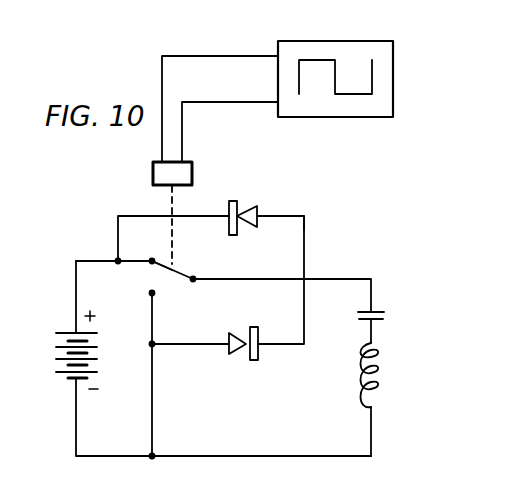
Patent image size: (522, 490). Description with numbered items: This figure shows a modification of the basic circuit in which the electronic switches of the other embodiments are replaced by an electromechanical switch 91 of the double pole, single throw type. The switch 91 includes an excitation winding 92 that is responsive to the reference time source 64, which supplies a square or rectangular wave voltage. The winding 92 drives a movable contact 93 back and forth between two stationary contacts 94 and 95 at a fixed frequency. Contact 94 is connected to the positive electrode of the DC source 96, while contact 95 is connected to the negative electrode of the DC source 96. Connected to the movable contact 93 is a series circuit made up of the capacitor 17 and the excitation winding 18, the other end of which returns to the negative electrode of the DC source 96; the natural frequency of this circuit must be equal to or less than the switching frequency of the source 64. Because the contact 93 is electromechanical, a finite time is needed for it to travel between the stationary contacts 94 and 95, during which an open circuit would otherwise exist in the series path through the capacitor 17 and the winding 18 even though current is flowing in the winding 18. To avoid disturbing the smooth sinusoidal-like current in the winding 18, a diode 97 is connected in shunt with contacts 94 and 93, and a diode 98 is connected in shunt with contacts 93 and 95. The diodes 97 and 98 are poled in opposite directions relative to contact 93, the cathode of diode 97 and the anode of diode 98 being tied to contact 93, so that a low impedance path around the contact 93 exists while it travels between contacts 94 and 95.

The reference time source 64 is at (352, 41).
The excitation winding 92 is at (194, 174).
The diode 97 is at (240, 204).
The electromechanical switch 91 is at (288, 209).
The contact 93 is at (182, 273).
The contact 94 is at (166, 263).
The contact 95 is at (154, 296).
The DC source 96 is at (66, 332).
The diode 98 is at (243, 355).
The capacitor 17 is at (375, 310).
The excitation winding 18 is at (362, 404).